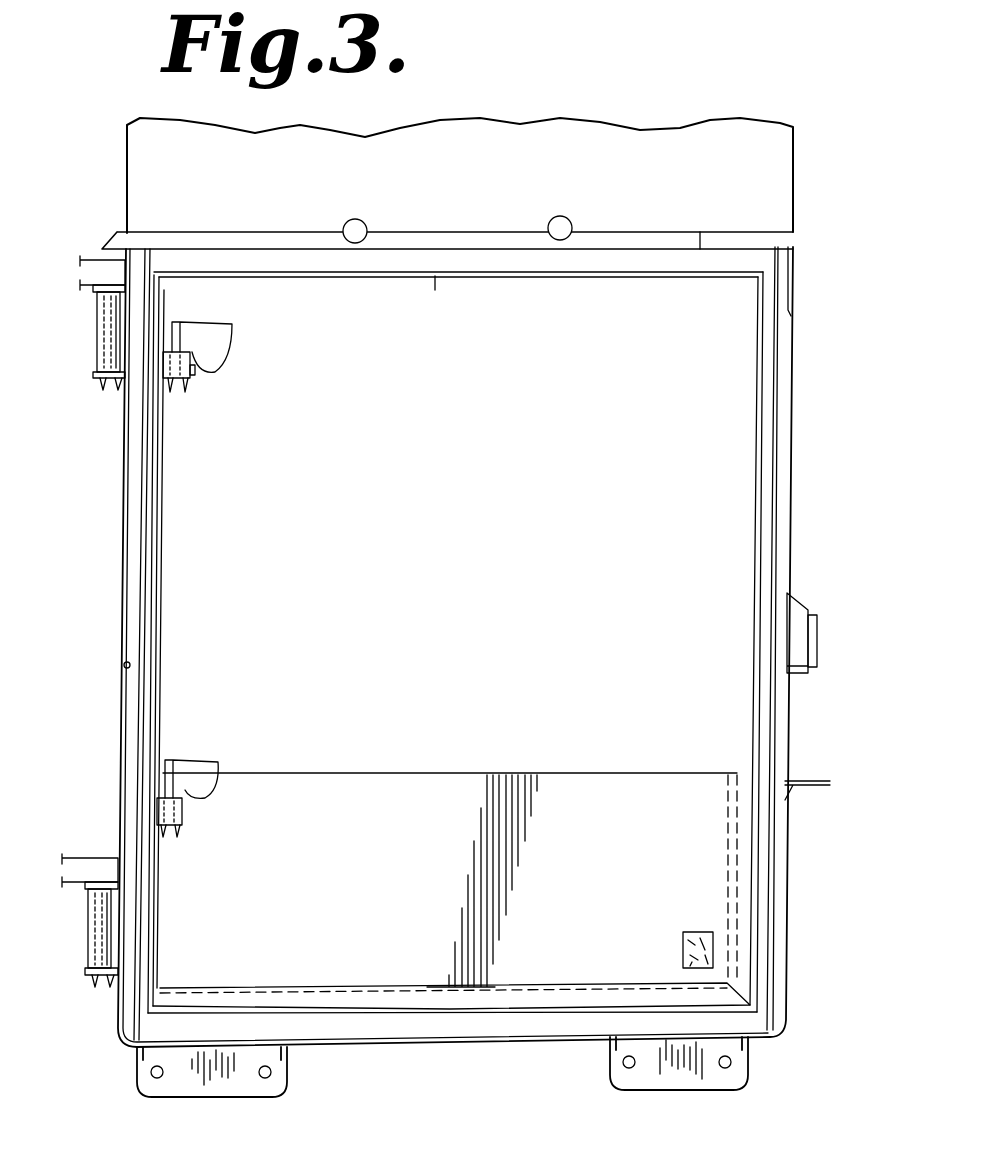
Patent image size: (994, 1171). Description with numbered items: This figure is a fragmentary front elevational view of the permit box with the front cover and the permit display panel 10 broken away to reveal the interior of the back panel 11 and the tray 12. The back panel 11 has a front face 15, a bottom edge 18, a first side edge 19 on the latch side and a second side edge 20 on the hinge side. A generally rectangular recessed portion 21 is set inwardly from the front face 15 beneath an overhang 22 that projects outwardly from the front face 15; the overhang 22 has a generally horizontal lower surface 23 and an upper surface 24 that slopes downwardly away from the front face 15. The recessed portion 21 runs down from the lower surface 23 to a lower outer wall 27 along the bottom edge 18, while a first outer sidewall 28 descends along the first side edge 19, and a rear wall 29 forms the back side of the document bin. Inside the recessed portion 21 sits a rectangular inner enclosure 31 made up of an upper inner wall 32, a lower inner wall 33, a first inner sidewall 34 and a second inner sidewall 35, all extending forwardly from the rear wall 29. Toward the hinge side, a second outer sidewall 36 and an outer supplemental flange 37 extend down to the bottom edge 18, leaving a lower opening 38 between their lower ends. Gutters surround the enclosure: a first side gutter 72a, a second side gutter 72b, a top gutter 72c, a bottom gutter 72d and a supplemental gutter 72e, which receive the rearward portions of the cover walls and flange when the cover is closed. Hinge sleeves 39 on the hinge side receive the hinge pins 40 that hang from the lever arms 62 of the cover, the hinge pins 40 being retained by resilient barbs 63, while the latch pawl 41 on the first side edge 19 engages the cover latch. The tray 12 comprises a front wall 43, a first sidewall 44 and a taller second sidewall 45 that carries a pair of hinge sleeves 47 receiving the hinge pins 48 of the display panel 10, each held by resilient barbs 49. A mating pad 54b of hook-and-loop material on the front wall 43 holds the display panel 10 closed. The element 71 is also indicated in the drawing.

The permit display panel 10 is at (205, 337).
The back panel 11 is at (790, 515).
The tray 12 is at (553, 790).
The front face 15 is at (229, 191).
The bottom edge 18 is at (388, 1048).
The first side edge 19 is at (793, 297).
The second side edge 20 is at (127, 490).
The recessed portion 21 is at (735, 397).
The overhang 22 is at (702, 233).
The lower surface 23 is at (578, 253).
The upper surface 24 is at (432, 243).
The lower outer wall 27 is at (330, 1048).
The first outer sidewall 28 is at (785, 480).
The rear wall 29 is at (432, 436).
The inner enclosure 31 is at (748, 496).
The upper inner wall 32 is at (434, 278).
The lower inner wall 33 is at (345, 1003).
The first inner sidewall 34 is at (748, 545).
The second inner sidewall 35 is at (150, 925).
The second outer sidewall 36 is at (140, 572).
The outer supplemental flange 37 is at (125, 667).
The lower opening 38 is at (125, 1040).
The hinge sleeves 39 is at (93, 322).
The hinge pins 40 is at (100, 338).
The latch pawl 41 is at (818, 672).
The front wall 43 is at (344, 868).
The first sidewall 44 is at (752, 883).
The second sidewall 45 is at (165, 512).
The hinge sleeves 47 is at (195, 362).
The hinge pins 48 is at (196, 374).
The resilient barbs 49 is at (186, 393).
The mating pad 54b is at (683, 950).
The lever arms 62 is at (120, 258).
The resilient barbs 63 is at (102, 385).
The arm 71 is at (808, 768).
The first side gutter 72a is at (760, 575).
The second side gutter 72b is at (150, 605).
The top gutter 72c is at (627, 260).
The bottom gutter 72d is at (505, 1012).
The supplemental gutter 72e is at (150, 465).